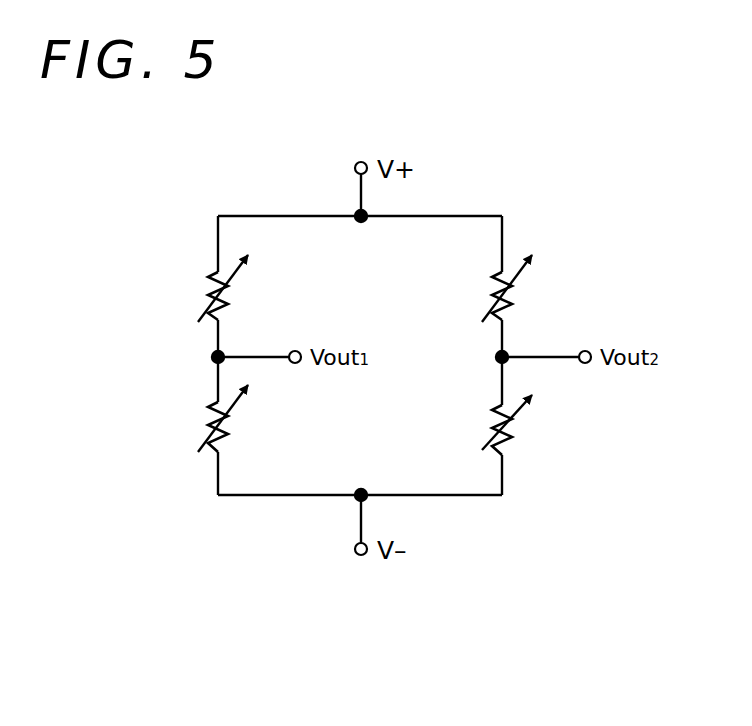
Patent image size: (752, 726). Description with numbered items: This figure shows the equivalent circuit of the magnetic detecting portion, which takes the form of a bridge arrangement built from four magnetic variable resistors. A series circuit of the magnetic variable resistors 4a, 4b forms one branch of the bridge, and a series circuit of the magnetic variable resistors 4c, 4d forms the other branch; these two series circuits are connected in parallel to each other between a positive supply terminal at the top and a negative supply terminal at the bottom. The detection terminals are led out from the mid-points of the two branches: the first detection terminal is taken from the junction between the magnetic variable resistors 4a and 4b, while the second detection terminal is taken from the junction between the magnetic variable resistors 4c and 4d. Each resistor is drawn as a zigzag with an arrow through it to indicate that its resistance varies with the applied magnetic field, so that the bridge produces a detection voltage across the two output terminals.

The magnetic variable resistor 4a is at (233, 298).
The magnetic variable resistor 4b is at (233, 429).
The magnetic variable resistor 4c is at (517, 298).
The magnetic variable resistor 4d is at (518, 427).